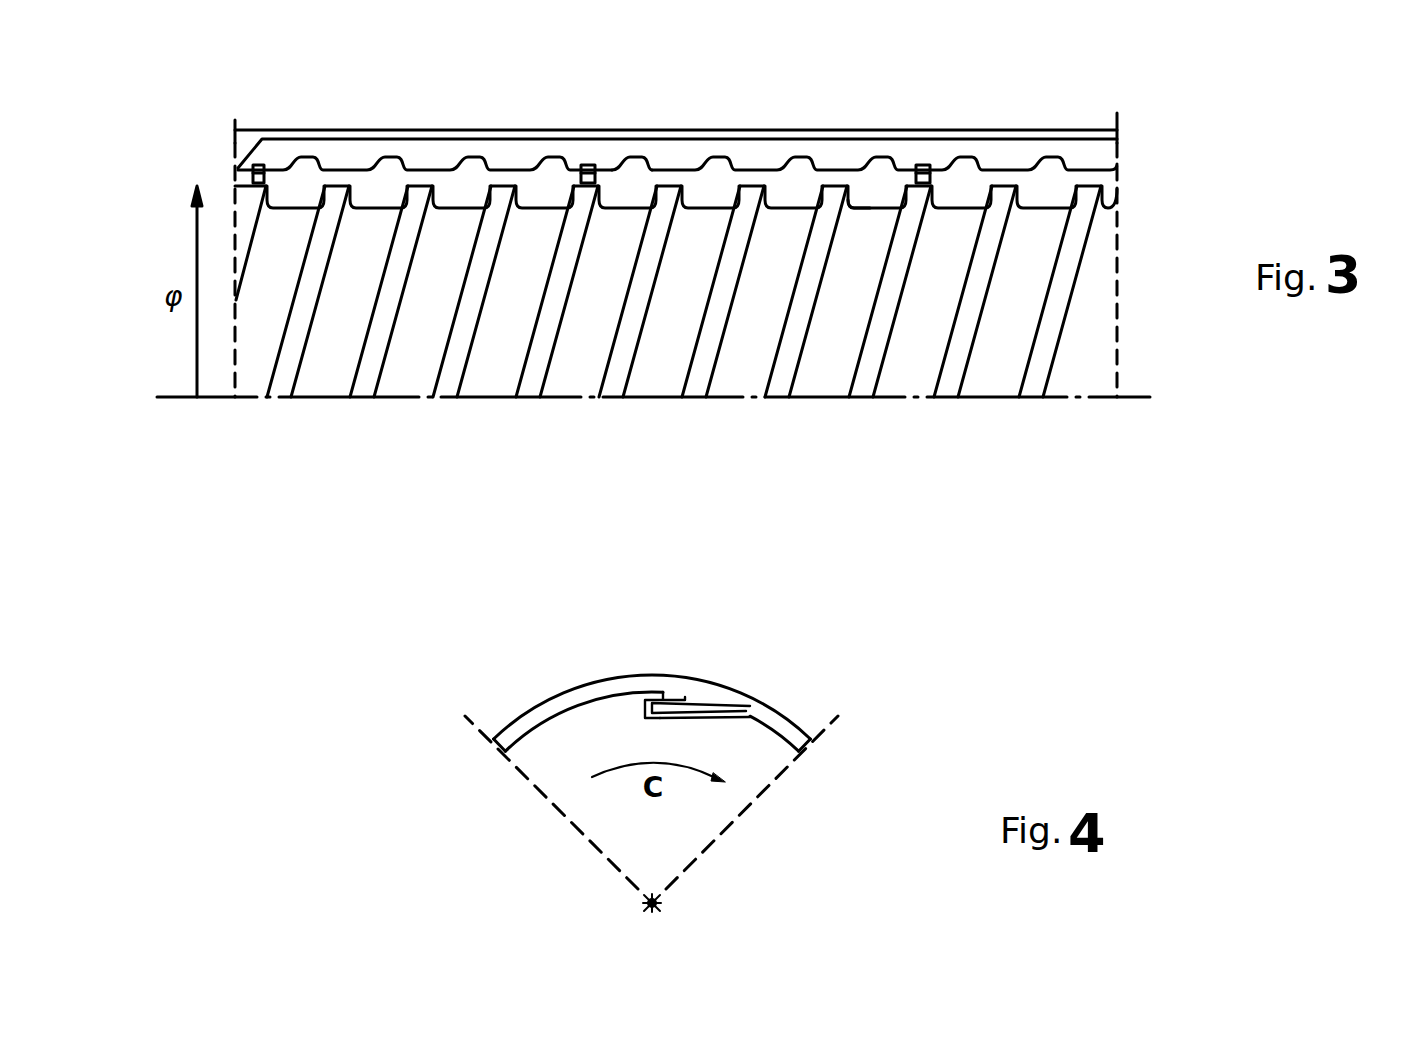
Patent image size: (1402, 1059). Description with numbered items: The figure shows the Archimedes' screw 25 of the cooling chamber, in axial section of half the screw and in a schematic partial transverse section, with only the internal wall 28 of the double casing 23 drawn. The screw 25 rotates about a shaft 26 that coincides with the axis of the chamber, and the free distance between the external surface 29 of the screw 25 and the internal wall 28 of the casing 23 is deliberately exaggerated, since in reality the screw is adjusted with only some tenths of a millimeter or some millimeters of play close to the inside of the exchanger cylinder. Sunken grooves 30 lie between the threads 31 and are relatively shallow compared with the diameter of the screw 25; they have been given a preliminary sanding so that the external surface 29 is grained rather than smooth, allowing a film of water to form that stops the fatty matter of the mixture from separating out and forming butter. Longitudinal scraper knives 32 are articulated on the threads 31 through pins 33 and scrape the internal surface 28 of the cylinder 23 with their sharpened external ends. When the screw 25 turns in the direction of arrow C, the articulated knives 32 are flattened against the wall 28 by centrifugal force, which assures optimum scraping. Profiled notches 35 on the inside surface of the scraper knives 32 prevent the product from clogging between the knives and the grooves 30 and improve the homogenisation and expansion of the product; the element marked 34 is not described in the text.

In FIG. 3, the double casing 23 is at (541, 119).
In FIG. 4, the double casing 23 is at (778, 712).
In FIG. 3, the Archimedes' screw 25 is at (833, 368).
In FIG. 4, the Archimedes' screw 25 is at (707, 810).
In FIG. 3, the shaft 26 is at (493, 398).
In FIG. 4, the shaft 26 is at (660, 905).
In FIG. 3, the internal wall 28 is at (1049, 119).
In FIG. 4, the internal wall 28 is at (575, 687).
In FIG. 3, the external surface 29 is at (860, 197).
In FIG. 3, the sunken grooves 30 is at (298, 205).
In FIG. 3, the threads 31 is at (345, 190).
In FIG. 4, the threads 31 is at (530, 723).
In FIG. 3, the longitudinal scraper knives 32 is at (757, 155).
In FIG. 4, the longitudinal scraper knives 32 is at (703, 703).
In FIG. 3, the pins 33 is at (930, 167).
In FIG. 4, the pins 33 is at (680, 699).
In FIG. 3, the intermediate plate 34 is at (427, 137).
In FIG. 4, the intermediate plate 34 is at (751, 706).
In FIG. 3, the profiled notches 35 is at (633, 159).